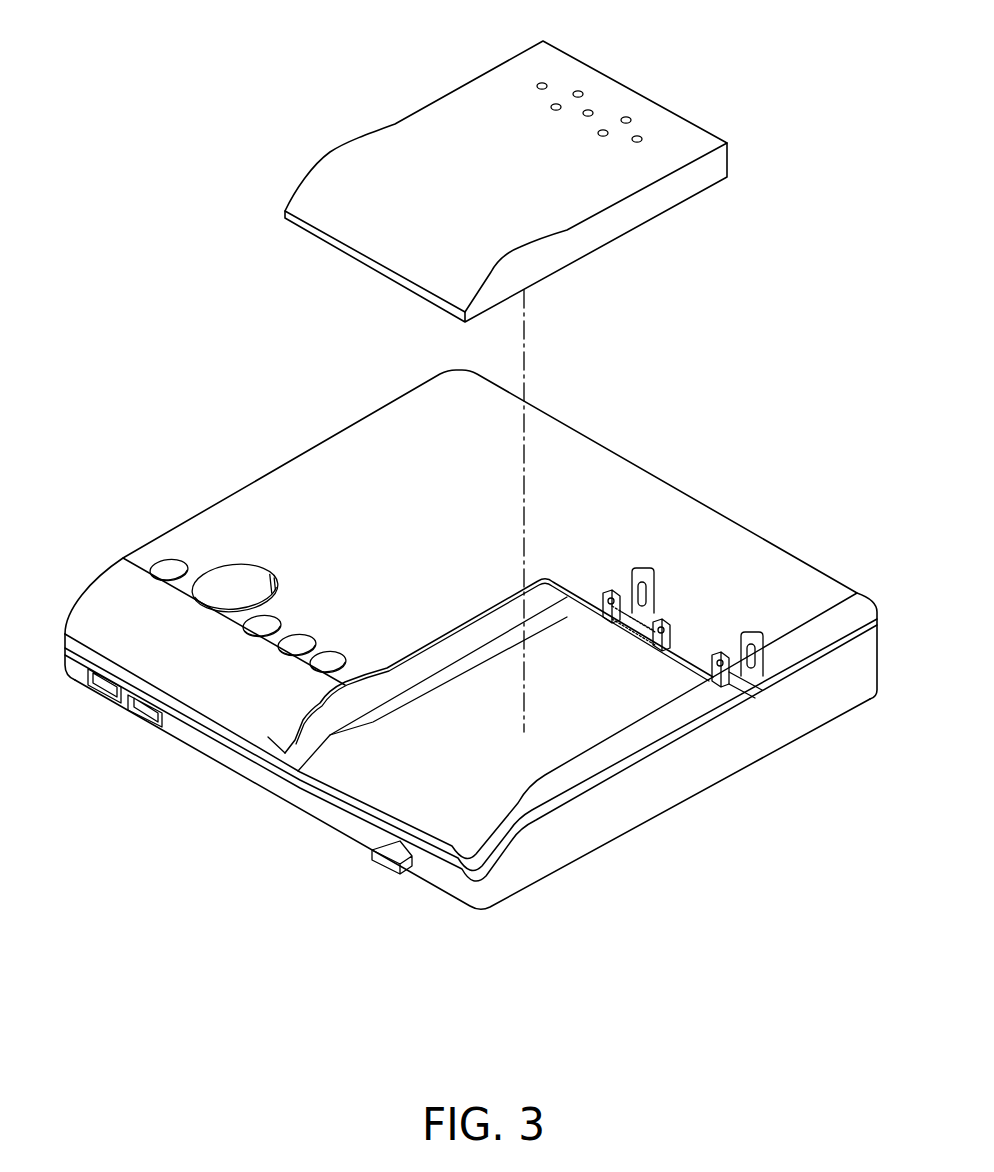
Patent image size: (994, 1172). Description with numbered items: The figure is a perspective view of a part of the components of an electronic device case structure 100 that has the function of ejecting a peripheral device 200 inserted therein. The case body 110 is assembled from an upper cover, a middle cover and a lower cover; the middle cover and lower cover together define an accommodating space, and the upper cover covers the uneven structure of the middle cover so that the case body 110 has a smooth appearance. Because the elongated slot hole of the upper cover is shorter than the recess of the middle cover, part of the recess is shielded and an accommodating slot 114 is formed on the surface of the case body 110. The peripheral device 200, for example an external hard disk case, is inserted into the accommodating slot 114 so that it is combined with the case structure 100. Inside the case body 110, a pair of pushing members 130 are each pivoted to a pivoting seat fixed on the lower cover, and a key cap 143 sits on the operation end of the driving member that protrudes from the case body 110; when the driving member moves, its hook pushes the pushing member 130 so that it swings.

The electronic device case structure 100 is at (590, 438).
The case body 110 is at (202, 450).
The accommodating slot 114 is at (425, 768).
The pushing member 130 is at (653, 558).
The key cap 143 is at (388, 864).
The peripheral device 200 is at (442, 149).